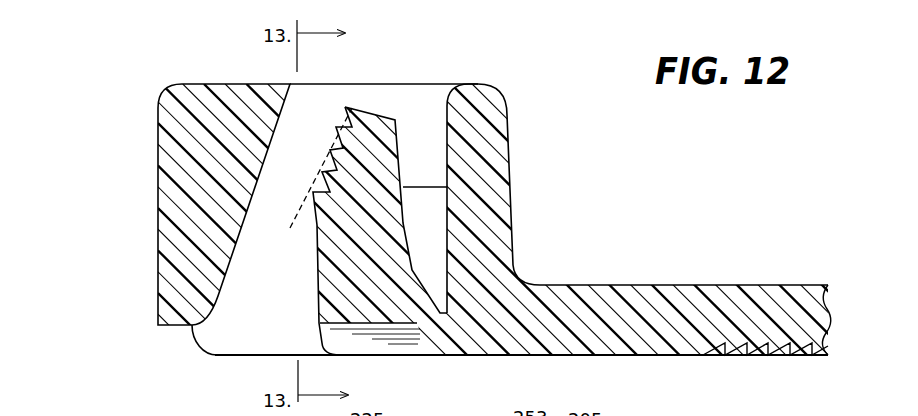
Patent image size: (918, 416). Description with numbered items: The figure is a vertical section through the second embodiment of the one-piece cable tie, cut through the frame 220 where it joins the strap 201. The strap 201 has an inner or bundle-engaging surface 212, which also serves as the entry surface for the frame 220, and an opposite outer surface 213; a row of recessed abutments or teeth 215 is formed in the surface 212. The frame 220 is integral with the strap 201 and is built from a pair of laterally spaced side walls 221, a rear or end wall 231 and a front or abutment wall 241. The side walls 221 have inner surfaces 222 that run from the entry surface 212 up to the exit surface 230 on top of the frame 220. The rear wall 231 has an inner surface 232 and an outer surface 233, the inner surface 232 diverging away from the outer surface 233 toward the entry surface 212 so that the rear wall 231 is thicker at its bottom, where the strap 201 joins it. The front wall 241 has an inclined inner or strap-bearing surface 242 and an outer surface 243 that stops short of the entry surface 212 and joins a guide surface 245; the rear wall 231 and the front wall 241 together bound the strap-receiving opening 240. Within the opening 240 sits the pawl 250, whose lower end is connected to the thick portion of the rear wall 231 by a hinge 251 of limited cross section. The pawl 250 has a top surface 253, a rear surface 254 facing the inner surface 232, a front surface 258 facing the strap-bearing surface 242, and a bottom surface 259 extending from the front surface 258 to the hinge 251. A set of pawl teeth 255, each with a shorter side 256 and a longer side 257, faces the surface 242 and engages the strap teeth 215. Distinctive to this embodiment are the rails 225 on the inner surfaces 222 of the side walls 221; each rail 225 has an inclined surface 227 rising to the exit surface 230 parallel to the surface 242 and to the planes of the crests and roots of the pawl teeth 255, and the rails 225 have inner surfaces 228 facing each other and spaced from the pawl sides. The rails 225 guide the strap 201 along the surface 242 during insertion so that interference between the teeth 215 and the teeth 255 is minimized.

The strap 201 is at (801, 282).
The inner or bundle-engaging surface 212 is at (260, 357).
The outer surface 213 is at (715, 284).
The teeth 215 is at (777, 354).
The frame 220 is at (158, 91).
The side walls 221 is at (438, 80).
The inner surfaces of side walls 222 is at (312, 97).
The rails 225 is at (357, 98).
The inclined surface 227 is at (306, 185).
The inner surfaces of rails 228 is at (410, 95).
The exit surface 230 is at (218, 82).
The rear wall 231 is at (484, 221).
The inner surface of rear wall 232 is at (448, 137).
The outer surface of rear wall 233 is at (513, 228).
The strap-receiving opening 240 is at (255, 293).
The front wall 241 is at (203, 173).
The inner surface of front wall 242 is at (222, 273).
The outer surface of front wall 243 is at (157, 212).
The guide surface 245 is at (170, 327).
The pawl 250 is at (400, 117).
The hinge 251 is at (428, 322).
The top surface of pawl 253 is at (380, 115).
The rear surface of pawl 254 is at (405, 187).
The pawl teeth 255 is at (342, 121).
The shorter side 256 is at (330, 152).
The longer side 257 is at (318, 173).
The front surface of pawl 258 is at (315, 278).
The bottom surface of pawl 259 is at (360, 325).